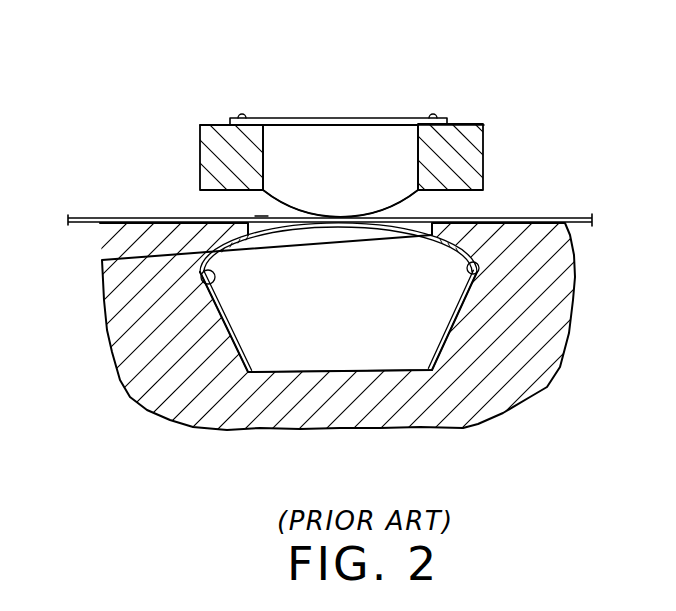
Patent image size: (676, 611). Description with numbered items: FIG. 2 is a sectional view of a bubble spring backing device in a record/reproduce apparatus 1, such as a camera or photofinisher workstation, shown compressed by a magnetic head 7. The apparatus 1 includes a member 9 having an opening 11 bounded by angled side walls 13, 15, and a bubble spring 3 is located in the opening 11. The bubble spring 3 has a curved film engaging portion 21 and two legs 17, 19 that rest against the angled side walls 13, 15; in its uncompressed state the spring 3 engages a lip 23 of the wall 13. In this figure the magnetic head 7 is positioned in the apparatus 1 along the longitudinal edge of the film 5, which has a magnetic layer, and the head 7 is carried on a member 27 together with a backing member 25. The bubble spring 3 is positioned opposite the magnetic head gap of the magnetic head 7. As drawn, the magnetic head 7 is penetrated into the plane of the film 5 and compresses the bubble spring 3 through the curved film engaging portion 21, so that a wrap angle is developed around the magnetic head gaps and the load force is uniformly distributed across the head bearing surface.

The apparatus 1 is at (338, 234).
The bubble spring 3 is at (293, 235).
The film 5 is at (133, 217).
The magnetic head 7 is at (365, 166).
The member 9 is at (122, 347).
The opening 11 is at (288, 333).
The side wall 13 is at (207, 297).
The side wall 15 is at (478, 273).
The leg 17 is at (232, 331).
The leg 19 is at (440, 343).
The curved film engaging portion 21 is at (322, 217).
The lip 23 is at (262, 221).
The backing member 25 is at (318, 120).
The member 27 is at (208, 124).